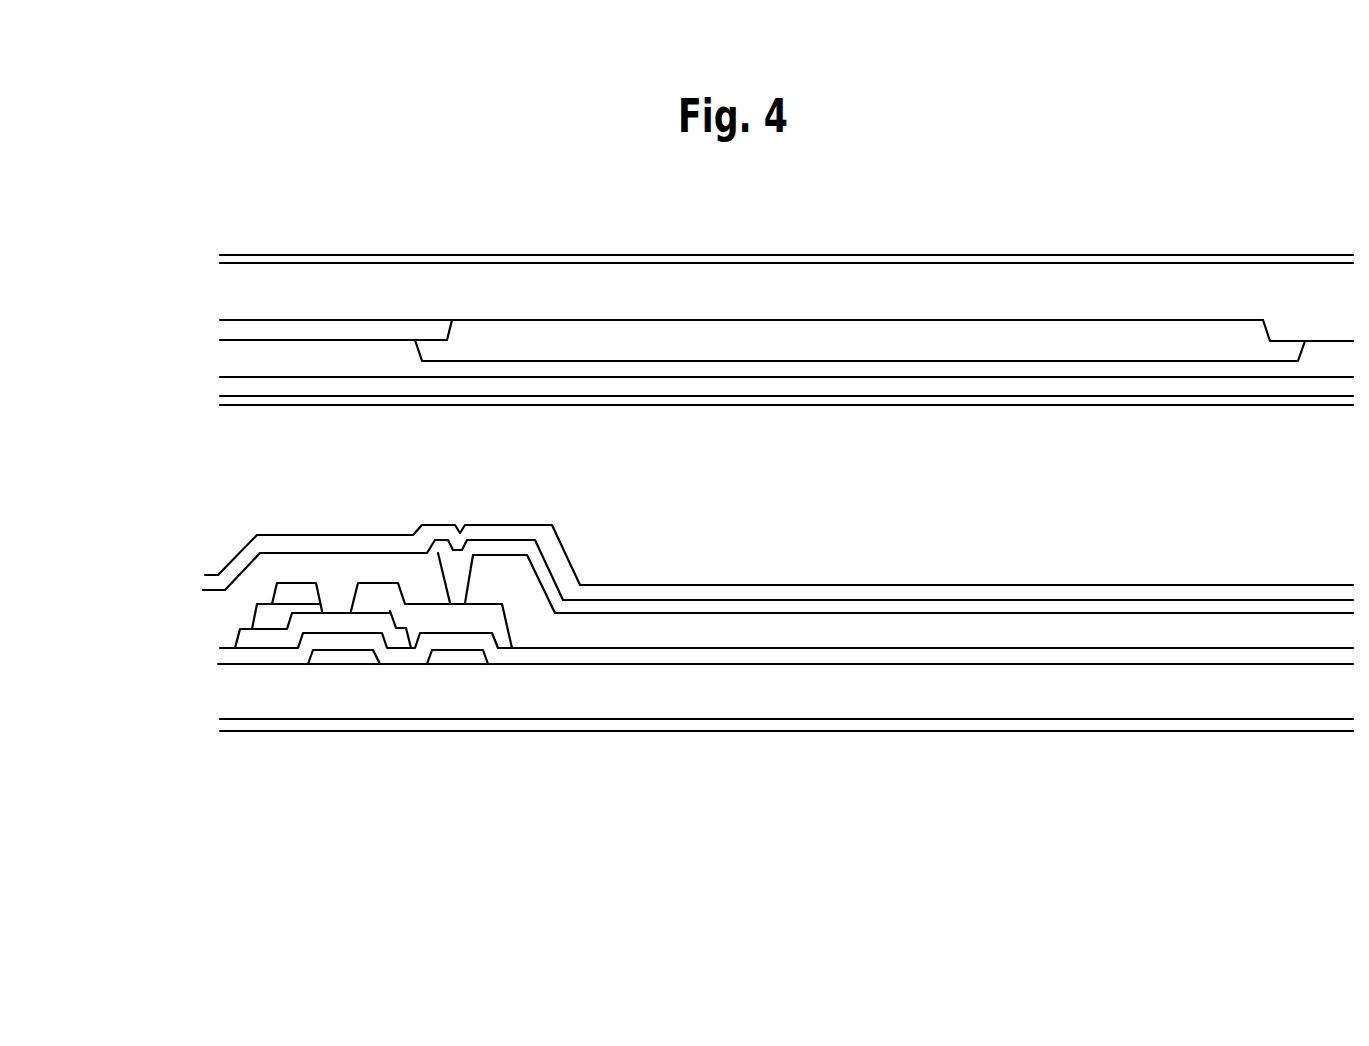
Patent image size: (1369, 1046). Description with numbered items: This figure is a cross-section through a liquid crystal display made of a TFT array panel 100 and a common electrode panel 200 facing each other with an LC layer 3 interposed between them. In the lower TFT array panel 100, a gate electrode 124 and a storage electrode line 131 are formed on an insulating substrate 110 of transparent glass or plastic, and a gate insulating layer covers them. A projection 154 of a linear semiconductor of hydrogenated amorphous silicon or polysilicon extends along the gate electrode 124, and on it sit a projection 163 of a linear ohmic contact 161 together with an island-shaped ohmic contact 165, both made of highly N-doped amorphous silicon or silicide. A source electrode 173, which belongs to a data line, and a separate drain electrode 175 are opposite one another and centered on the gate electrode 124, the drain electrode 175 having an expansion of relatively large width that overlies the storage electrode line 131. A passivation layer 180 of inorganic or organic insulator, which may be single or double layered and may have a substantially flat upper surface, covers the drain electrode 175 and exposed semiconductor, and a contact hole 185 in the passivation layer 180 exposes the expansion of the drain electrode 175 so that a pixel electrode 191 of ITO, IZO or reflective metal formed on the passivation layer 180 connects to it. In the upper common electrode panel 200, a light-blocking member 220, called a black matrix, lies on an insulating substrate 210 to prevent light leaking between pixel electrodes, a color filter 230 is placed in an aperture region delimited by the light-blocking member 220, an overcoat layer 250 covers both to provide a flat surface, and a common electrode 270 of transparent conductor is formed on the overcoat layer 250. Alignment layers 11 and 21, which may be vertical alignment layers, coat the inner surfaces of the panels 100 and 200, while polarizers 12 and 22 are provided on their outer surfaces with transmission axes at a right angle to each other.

The common electrode panel 200 is at (185, 303).
The polarizer 22 is at (903, 261).
The insulating substrate 210 is at (755, 278).
The light-blocking member 220 is at (414, 323).
The color filter 230 is at (590, 325).
The overcoat layer 250 is at (523, 372).
The common electrode 270 is at (658, 383).
The alignment layer 21 is at (1080, 398).
The LC layer 3 is at (268, 463).
The TFT array panel 100 is at (183, 652).
The insulating substrate 110 is at (688, 707).
The polarizer 12 is at (800, 722).
The gate electrode 124 is at (355, 657).
The storage electrode line 131 is at (443, 657).
The projection 154 is at (345, 625).
The linear ohmic contact 161 is at (255, 619).
The projection 163 is at (310, 608).
The island-shaped ohmic contact 165 is at (410, 622).
The source electrode 173 is at (263, 616).
The drain electrode 175 is at (470, 617).
The contact hole 185 is at (465, 570).
The passivation layer 180 is at (643, 635).
The pixel electrode 191 is at (600, 605).
The alignment layer 11 is at (1042, 594).